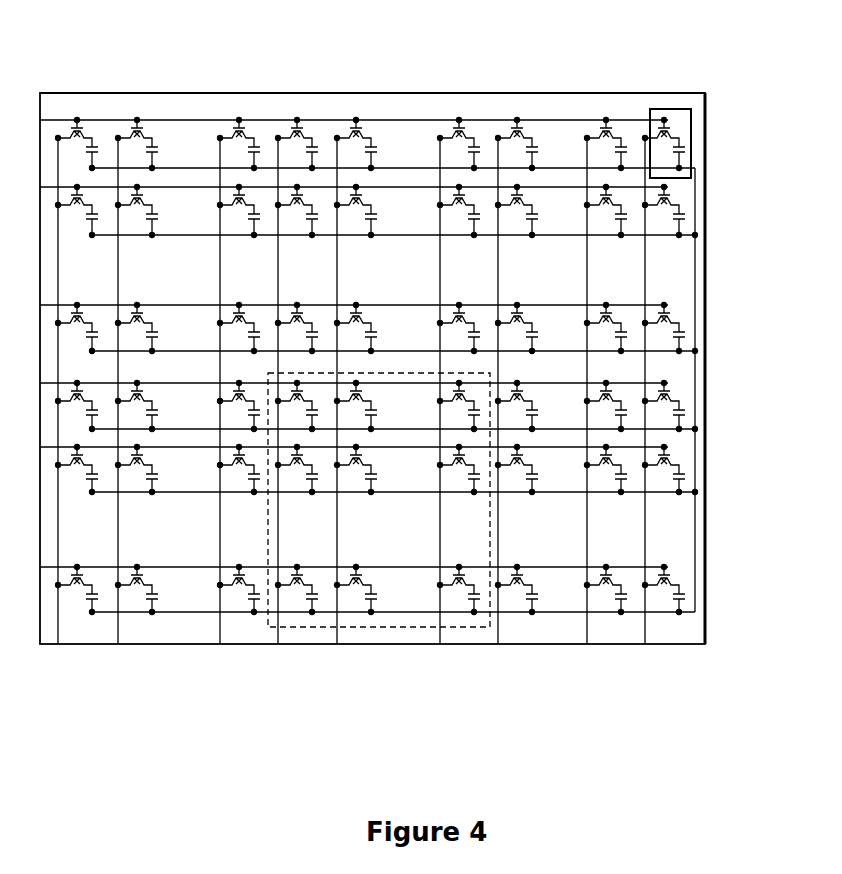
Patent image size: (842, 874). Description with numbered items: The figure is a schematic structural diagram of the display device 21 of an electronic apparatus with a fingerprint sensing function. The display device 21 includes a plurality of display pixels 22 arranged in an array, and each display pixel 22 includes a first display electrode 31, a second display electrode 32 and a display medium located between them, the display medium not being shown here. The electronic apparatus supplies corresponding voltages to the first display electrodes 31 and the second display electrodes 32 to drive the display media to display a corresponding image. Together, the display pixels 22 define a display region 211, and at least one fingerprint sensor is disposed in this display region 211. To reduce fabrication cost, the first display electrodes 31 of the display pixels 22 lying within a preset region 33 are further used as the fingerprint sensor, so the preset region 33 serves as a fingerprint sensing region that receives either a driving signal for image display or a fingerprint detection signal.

The display device 21 is at (243, 89).
The display region 211 is at (415, 104).
The first display electrode 31 is at (722, 100).
The display pixel 22 is at (692, 132).
The second display electrode 32 is at (677, 160).
The preset region 33 is at (388, 623).